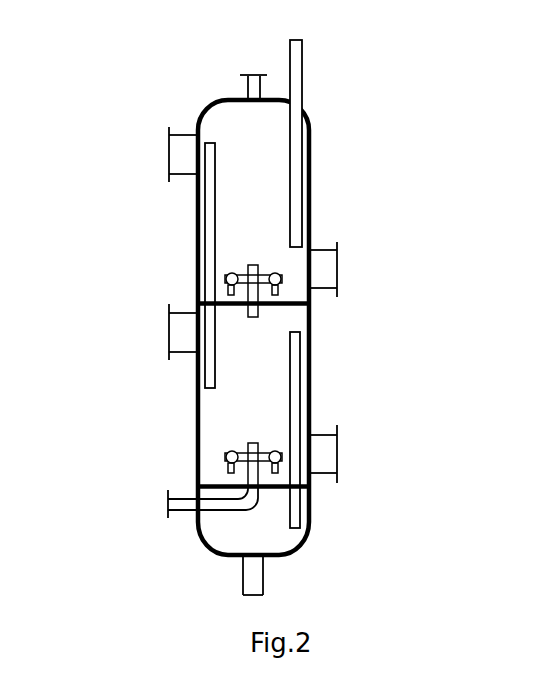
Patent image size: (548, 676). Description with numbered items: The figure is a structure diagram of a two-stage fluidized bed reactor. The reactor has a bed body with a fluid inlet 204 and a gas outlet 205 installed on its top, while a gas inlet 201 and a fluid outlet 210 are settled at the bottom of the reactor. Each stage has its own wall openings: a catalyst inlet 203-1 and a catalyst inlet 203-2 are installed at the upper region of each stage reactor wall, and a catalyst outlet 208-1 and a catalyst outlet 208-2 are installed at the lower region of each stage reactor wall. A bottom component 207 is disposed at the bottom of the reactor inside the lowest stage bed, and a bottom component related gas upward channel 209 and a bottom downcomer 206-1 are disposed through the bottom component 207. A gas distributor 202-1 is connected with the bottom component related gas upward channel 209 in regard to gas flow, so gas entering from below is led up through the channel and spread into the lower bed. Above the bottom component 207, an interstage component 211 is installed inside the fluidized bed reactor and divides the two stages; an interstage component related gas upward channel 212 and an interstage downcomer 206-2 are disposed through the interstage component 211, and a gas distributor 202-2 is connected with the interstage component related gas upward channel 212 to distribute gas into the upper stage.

The gas inlet 201 is at (168, 500).
The gas distributor 202-1 is at (228, 455).
The gas distributor 202-2 is at (226, 277).
The catalyst inlet 203-1 is at (168, 331).
The catalyst inlet 203-2 is at (169, 137).
The fluid inlet 204 is at (303, 78).
The gas outlet 205 is at (242, 75).
The bottom downcomer 206-1 is at (302, 370).
The interstage downcomer 206-2 is at (207, 200).
The bottom component 207 is at (275, 485).
The catalyst outlet 208-1 is at (340, 463).
The catalyst outlet 208-2 is at (340, 278).
The bottom component related gas upward channel 209 is at (252, 510).
The fluid outlet 210 is at (263, 573).
The interstage component 211 is at (287, 300).
The interstage component related gas upward channel 212 is at (248, 295).